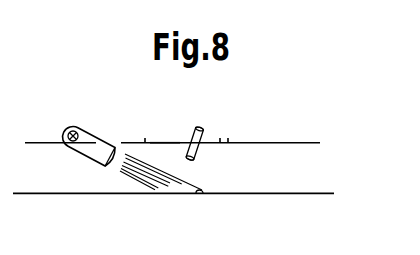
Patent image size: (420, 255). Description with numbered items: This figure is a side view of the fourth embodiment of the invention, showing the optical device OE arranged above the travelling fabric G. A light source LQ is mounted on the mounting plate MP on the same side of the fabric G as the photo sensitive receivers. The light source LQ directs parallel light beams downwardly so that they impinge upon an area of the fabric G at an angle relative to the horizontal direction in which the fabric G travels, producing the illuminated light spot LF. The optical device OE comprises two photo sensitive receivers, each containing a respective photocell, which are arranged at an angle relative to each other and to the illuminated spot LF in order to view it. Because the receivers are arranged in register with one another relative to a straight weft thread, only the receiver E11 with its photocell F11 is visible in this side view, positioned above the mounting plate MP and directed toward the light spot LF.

The light source LQ is at (90, 140).
The optical device OE is at (162, 141).
The photocell F11 is at (200, 126).
The photo sensitive receiver E11 is at (198, 154).
The mounting plate MP is at (297, 143).
The fabric G is at (334, 193).
The illuminated light spot LF is at (204, 193).